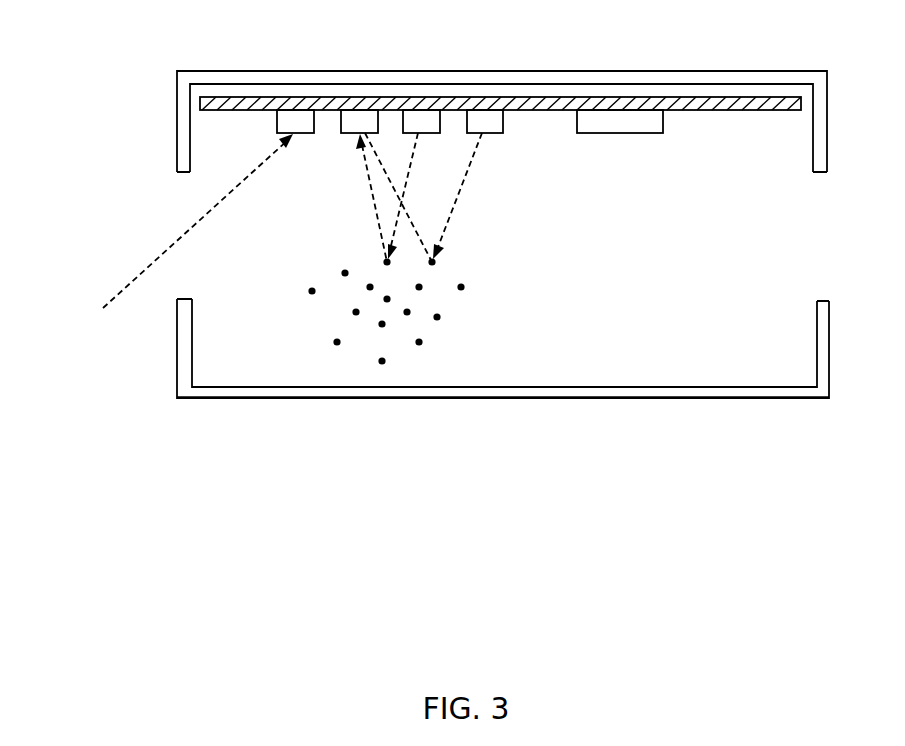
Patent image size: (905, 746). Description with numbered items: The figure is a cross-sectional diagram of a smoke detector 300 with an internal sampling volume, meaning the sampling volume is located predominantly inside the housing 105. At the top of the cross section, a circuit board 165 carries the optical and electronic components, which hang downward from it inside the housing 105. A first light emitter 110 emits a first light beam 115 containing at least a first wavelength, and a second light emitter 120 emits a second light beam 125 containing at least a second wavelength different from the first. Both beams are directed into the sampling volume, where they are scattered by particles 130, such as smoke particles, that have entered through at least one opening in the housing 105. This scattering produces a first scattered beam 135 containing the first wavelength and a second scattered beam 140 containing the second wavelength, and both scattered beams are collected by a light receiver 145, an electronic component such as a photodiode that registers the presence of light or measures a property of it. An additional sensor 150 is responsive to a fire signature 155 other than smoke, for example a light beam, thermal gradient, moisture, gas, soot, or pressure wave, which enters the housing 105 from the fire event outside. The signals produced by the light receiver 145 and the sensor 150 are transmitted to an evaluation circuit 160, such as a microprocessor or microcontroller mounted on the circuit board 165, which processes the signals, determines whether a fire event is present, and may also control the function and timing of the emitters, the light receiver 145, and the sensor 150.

The smoke detector 300 is at (117, 113).
The housing 105 is at (777, 398).
The first light emitter 110 is at (414, 122).
The first light beam 115 is at (410, 183).
The second light emitter 120 is at (476, 122).
The second light beam 125 is at (483, 147).
The particles 130 is at (474, 308).
The first scattered beam 135 is at (380, 233).
The second scattered beam 140 is at (413, 222).
The light receiver 145 is at (352, 122).
The sensor 150 is at (290, 122).
The fire signature 155 is at (155, 253).
The evaluation circuit 160 is at (620, 133).
The circuit board 165 is at (728, 103).